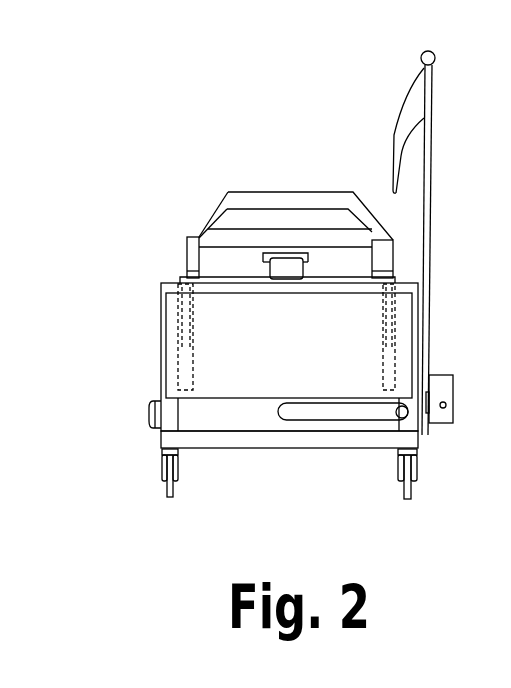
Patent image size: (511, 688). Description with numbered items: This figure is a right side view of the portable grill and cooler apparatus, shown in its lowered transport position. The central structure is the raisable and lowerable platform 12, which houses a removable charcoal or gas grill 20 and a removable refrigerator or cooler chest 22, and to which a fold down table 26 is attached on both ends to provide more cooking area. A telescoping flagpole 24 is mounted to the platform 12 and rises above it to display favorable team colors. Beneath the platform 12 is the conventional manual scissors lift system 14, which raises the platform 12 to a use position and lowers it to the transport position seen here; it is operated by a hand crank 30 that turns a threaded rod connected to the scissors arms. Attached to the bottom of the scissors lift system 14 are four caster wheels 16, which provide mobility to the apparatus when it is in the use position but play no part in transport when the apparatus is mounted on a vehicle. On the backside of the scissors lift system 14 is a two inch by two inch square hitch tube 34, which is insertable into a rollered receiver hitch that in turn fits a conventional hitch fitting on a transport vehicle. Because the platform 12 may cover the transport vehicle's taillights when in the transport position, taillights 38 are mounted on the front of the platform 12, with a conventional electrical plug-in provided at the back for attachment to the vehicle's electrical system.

The platform 12 is at (162, 322).
The scissors lift system 14 is at (130, 454).
The caster wheels 16 is at (172, 495).
The grill 20 is at (265, 192).
The cooler chest 22 is at (228, 220).
The telescoping flagpole 24 is at (431, 177).
The fold down table 26 is at (293, 354).
The hand crank 30 is at (362, 413).
The square hitch tube 34 is at (443, 380).
The taillights 38 is at (146, 417).